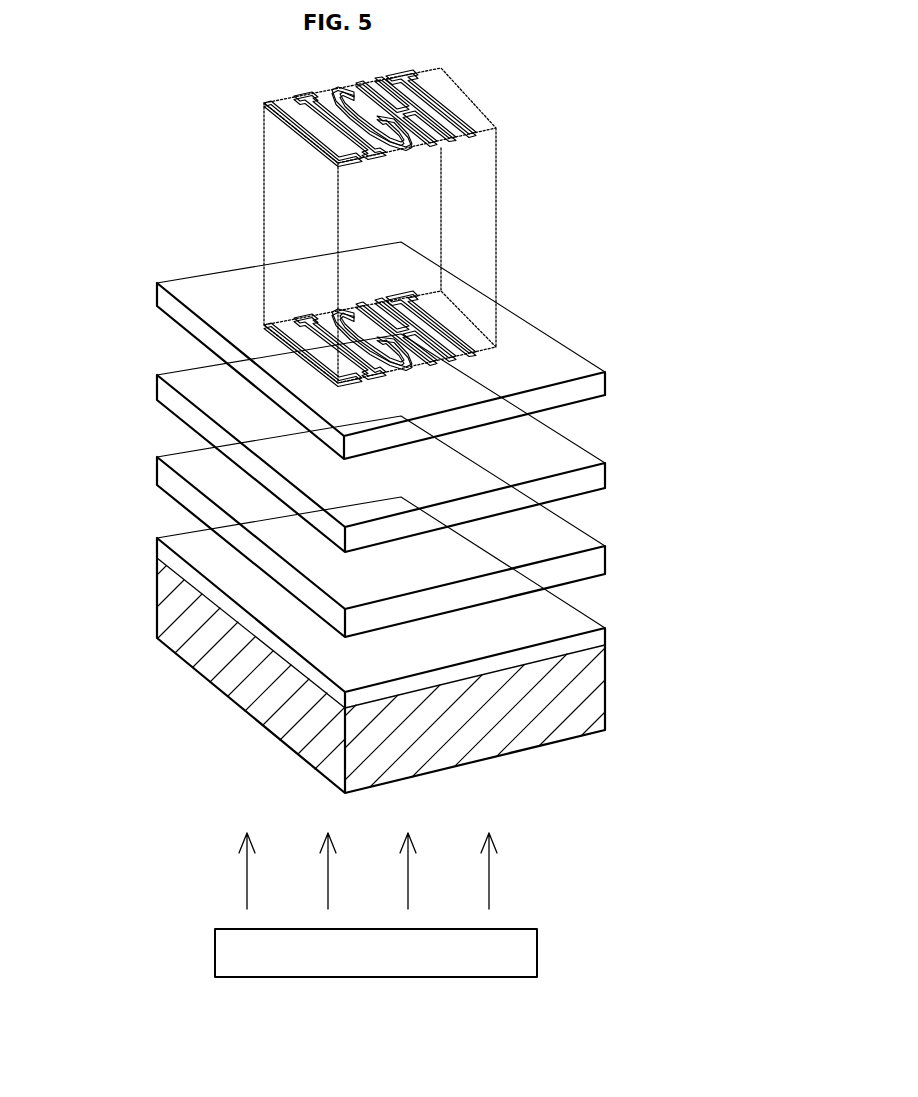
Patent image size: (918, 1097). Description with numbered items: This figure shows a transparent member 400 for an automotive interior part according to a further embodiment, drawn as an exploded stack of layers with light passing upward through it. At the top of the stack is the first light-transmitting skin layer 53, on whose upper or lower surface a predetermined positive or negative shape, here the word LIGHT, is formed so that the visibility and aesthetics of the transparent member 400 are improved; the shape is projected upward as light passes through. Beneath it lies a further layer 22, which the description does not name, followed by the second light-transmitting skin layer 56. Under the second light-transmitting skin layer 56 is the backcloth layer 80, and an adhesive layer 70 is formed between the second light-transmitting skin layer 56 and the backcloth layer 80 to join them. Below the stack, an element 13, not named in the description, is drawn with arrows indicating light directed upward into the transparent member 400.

The transparent member 400 is at (98, 76).
The first light-transmitting skin layer 53 is at (168, 305).
The diffusion plate 22 is at (167, 397).
The second light-transmitting skin layer 56 is at (172, 477).
The adhesive layer 70 is at (180, 545).
The backcloth layer 80 is at (170, 607).
The light source 13 is at (515, 953).